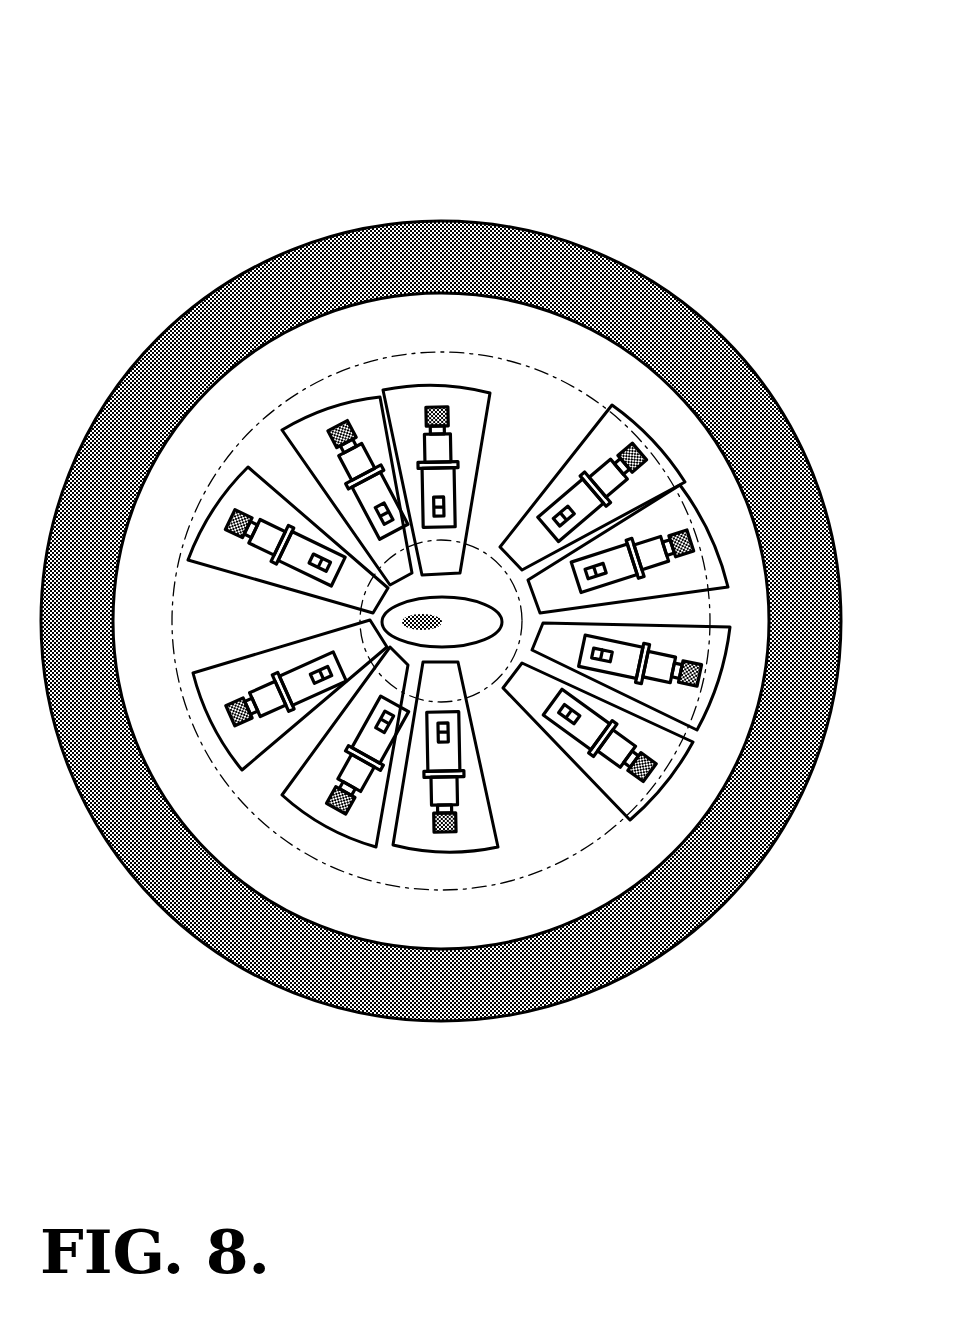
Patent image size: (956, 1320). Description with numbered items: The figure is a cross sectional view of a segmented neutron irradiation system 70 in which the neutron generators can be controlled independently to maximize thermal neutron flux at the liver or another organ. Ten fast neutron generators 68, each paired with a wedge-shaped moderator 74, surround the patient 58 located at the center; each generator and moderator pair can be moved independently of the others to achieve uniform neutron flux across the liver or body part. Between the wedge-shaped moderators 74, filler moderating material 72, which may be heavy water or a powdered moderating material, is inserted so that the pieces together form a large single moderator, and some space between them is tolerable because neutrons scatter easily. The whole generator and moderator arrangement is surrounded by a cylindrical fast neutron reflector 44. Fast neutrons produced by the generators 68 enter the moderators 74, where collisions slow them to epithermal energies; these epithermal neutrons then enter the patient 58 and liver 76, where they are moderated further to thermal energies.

The segmented neutron irradiation system 70 is at (434, 112).
The cylindrical fast neutron reflector 44 is at (176, 858).
The filler moderating material 72 is at (527, 810).
The patient 58 is at (475, 622).
The liver 76 is at (427, 622).
The wedge-shaped moderator 74 is at (630, 410).
The fast neutron generator 68 is at (342, 473).